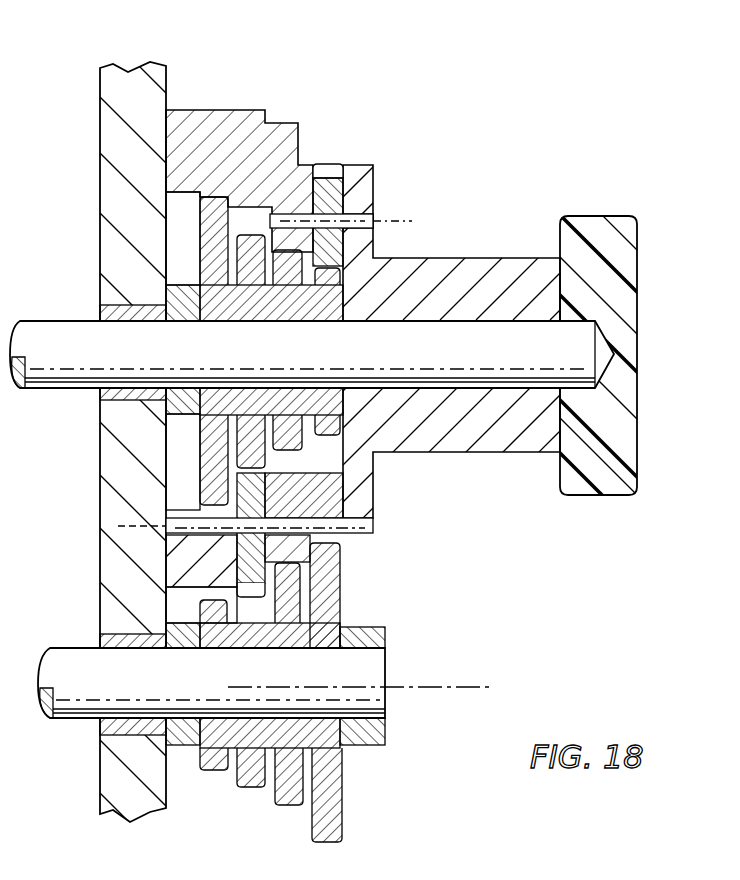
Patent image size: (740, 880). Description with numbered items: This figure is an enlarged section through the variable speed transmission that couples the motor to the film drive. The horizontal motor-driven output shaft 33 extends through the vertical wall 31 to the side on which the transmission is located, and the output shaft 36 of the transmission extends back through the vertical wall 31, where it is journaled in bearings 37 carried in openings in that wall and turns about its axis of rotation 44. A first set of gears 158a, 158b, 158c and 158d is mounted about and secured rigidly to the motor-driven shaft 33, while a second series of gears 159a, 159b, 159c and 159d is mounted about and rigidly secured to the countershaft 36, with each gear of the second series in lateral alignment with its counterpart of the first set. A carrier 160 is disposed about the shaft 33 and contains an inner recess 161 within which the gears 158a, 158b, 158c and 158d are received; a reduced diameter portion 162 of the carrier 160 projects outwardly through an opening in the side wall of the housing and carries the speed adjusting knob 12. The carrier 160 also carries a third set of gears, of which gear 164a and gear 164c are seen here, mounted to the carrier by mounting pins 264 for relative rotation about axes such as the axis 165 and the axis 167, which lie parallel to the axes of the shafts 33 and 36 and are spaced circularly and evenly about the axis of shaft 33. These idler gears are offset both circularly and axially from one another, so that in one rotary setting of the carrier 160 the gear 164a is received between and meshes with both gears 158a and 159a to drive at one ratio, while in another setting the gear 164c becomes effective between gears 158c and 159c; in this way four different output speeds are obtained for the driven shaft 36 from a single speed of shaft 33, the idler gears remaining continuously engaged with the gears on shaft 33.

The speed adjusting knob 12 is at (628, 258).
The vertical wall 31 is at (107, 118).
The output shaft 33 is at (52, 320).
The output shaft 36 is at (75, 650).
The bearings 37 is at (115, 398).
The axis of rotation 44 is at (428, 687).
The gear 158a is at (214, 197).
The gear 158b is at (252, 235).
The gear 158c is at (290, 250).
The gear 158d is at (343, 290).
The gear 159a is at (210, 772).
The gear 159b is at (248, 792).
The gear 159c is at (287, 808).
The gear 159d is at (322, 840).
The carrier 160 is at (178, 110).
The inner recess 161 is at (170, 196).
The reduced diameter portion 162 is at (486, 258).
The gear 164a is at (330, 164).
The gear 164c is at (265, 500).
The axis 165 is at (390, 218).
The axis 167 is at (150, 527).
The mounting pins 264 is at (358, 212).